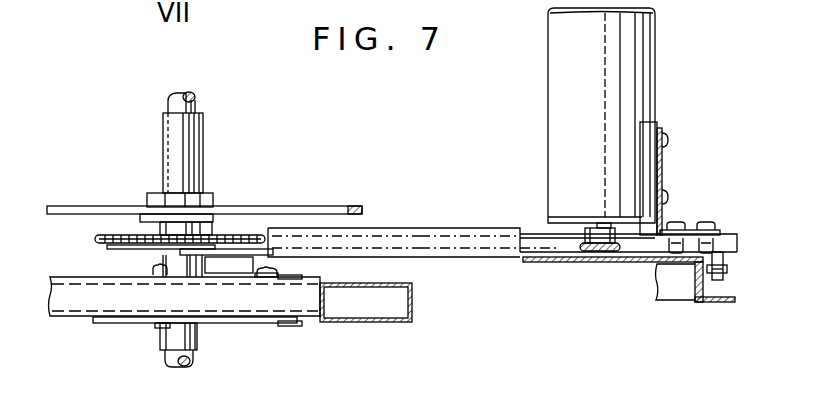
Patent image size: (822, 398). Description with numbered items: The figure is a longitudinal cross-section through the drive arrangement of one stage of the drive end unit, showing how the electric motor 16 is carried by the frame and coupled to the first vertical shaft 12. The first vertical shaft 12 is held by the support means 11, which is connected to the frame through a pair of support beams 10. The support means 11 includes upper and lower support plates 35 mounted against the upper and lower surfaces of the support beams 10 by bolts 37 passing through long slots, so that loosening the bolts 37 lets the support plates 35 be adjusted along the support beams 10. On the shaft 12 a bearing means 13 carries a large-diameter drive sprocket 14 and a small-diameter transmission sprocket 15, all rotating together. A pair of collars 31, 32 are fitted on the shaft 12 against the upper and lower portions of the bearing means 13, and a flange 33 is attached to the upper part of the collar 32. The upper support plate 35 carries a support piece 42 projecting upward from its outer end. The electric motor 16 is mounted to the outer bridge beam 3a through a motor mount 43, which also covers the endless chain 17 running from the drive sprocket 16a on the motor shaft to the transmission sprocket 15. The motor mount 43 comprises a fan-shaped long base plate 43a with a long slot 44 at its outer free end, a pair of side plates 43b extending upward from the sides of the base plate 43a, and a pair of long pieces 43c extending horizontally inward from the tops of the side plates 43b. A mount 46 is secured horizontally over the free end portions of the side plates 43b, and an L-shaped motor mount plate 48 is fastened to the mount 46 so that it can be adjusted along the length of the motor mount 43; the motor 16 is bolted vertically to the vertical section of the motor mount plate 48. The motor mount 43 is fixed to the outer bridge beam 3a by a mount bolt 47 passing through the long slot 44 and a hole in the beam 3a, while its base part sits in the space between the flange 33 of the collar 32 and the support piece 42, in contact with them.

The outer bridge beam 3a is at (713, 303).
The support beam 10 is at (396, 320).
The support means 11 is at (110, 326).
The first vertical shaft 12 is at (198, 101).
The bearing means 13 is at (157, 192).
The drive sprocket 14 is at (332, 198).
The transmission sprocket 15 is at (250, 236).
The electric motor 16 is at (550, 86).
The drive sprocket 16a is at (606, 256).
The endless chain 17 is at (538, 263).
The collar 31 is at (163, 136).
The collar 32 is at (158, 262).
The flange 33 is at (125, 247).
The support plate 35 is at (95, 277).
The bolt 37 is at (270, 268).
The support piece 42 is at (237, 268).
The motor mount 43 is at (461, 226).
The base plate 43a is at (567, 262).
The side plate 43b is at (398, 235).
The long piece 43c is at (530, 236).
The long slot 44 is at (737, 246).
The mount 46 is at (722, 238).
The mount bolt 47 is at (726, 280).
The motor mount plate 48 is at (665, 160).